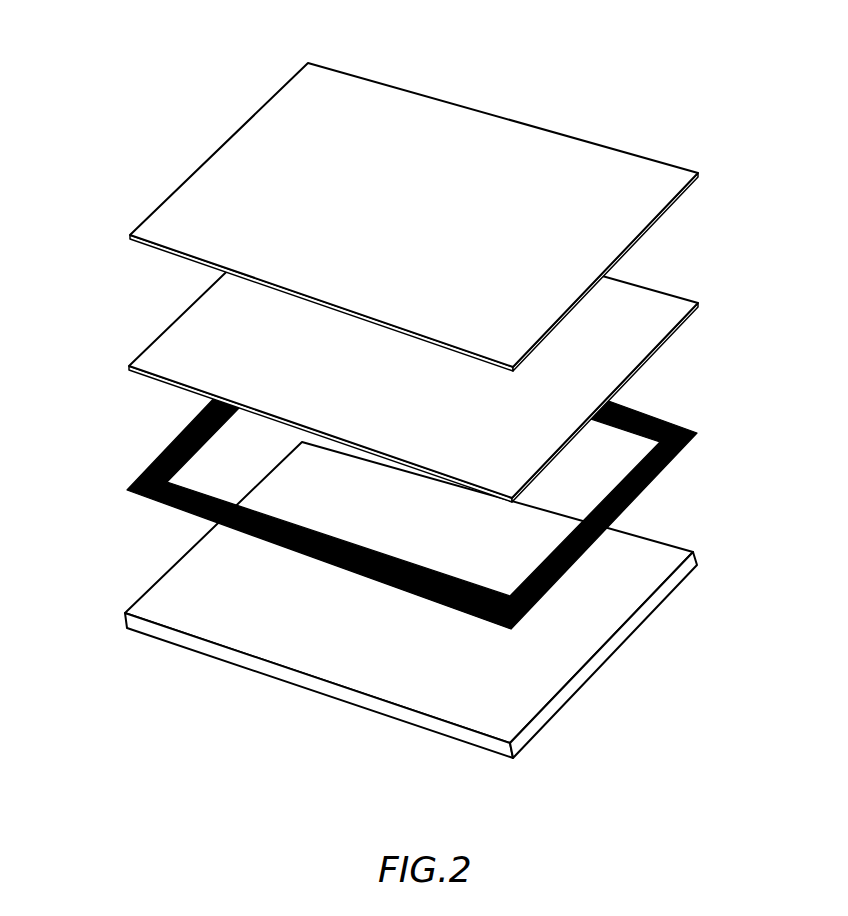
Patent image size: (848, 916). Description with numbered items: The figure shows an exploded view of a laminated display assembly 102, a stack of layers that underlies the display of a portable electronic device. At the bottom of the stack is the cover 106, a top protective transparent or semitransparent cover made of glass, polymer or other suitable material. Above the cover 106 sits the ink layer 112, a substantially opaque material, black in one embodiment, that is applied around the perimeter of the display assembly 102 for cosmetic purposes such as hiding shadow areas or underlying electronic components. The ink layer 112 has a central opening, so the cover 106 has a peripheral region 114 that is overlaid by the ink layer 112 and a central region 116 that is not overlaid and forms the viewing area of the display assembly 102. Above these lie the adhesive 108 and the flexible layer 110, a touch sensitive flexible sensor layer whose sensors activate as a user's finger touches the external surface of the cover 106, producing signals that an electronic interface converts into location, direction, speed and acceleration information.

The laminated display assembly 102 is at (108, 66).
The cover 106 is at (434, 600).
The adhesive 108 is at (680, 330).
The flexible layer 110 is at (680, 202).
The ink layer 112 is at (687, 450).
The peripheral region 114 is at (193, 639).
The central region 116 is at (352, 623).